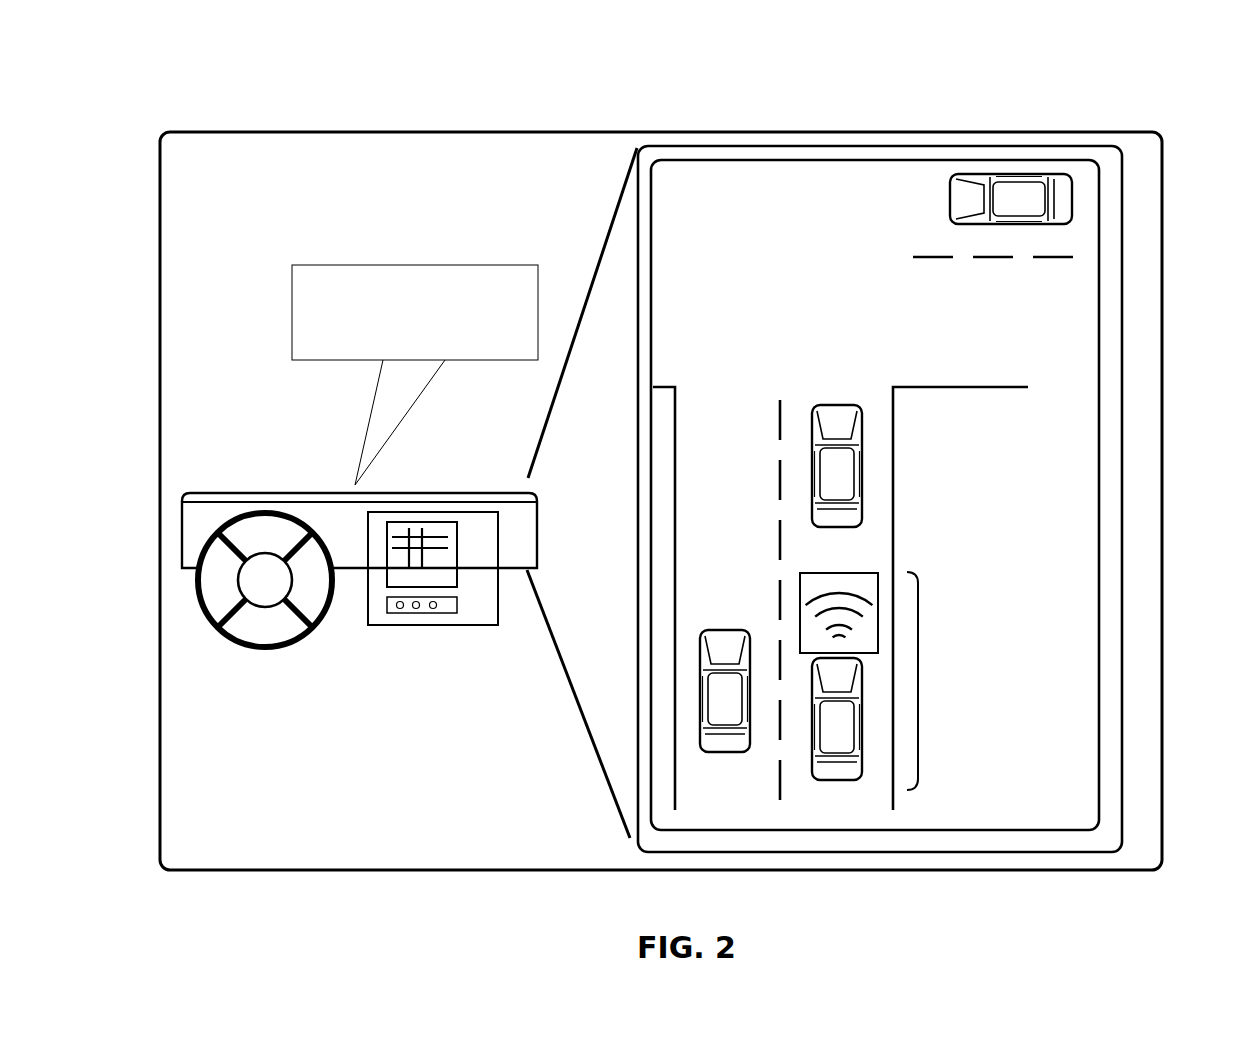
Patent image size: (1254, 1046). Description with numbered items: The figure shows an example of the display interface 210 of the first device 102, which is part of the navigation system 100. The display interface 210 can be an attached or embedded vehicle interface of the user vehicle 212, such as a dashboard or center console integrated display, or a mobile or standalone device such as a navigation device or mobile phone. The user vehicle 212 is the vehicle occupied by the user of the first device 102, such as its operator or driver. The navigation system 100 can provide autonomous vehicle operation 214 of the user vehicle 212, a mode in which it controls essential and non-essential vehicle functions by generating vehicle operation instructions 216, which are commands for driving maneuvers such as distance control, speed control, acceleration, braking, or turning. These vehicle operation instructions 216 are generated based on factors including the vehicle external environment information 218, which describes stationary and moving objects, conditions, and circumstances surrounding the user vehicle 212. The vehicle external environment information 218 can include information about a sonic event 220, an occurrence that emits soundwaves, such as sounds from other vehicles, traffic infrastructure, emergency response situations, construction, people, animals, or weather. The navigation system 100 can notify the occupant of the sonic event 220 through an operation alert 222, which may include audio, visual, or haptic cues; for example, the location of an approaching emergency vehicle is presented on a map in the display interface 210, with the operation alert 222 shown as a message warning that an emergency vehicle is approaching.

The navigation system 100 is at (298, 102).
The first device 102 is at (429, 717).
The display interface 210 is at (1099, 401).
The user vehicle 212 is at (1066, 197).
The autonomous vehicle operation 214 is at (199, 599).
The vehicle operation instructions 216 is at (448, 560).
The vehicle external environment information 218 is at (968, 542).
The sonic event 220 is at (920, 670).
The operation alert 222 is at (398, 265).